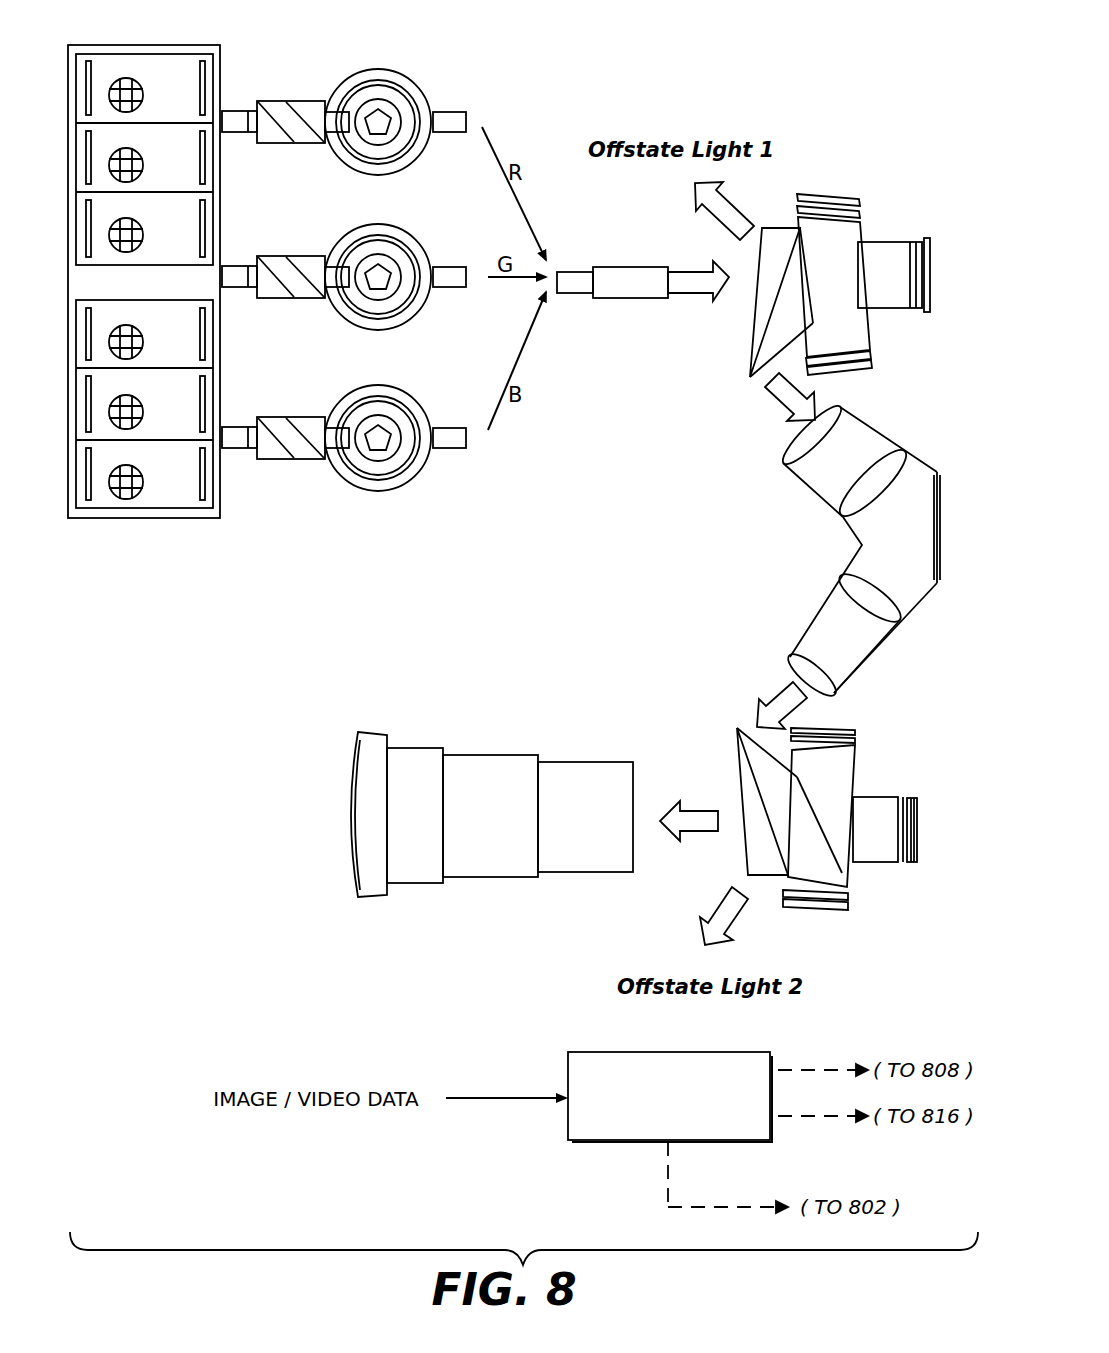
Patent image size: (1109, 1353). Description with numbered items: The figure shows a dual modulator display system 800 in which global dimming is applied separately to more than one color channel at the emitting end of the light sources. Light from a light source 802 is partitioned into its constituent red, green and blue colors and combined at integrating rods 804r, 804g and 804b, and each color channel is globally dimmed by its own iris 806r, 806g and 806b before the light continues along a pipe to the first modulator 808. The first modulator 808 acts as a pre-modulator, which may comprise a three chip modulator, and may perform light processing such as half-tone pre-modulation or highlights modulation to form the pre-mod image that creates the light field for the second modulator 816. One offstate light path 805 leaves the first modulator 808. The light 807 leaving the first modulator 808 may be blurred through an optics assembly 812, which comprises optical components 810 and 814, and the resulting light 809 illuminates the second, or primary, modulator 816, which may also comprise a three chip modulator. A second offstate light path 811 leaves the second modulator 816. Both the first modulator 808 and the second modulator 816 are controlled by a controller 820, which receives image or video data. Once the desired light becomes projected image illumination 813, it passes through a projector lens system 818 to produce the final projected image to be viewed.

The dual modulator display system 800 is at (613, 56).
The light source 802 is at (220, 36).
The red integrating rod 804r is at (267, 100).
The green integrating rod 804g is at (264, 255).
The blue integrating rod 804b is at (267, 416).
The red iris 806r is at (410, 78).
The green iris 806g is at (410, 233).
The blue iris 806b is at (410, 394).
The offstate light path 805 is at (742, 190).
The light 807 is at (772, 415).
The first modulator 808 is at (632, 267).
The light 809 is at (755, 720).
The optical component 810 is at (776, 466).
The offstate light path 811 is at (705, 925).
The optics assembly 812 is at (940, 428).
The projected image illumination 813 is at (706, 805).
The optical component 814 is at (905, 627).
The second modulator 816 is at (920, 910).
The projector lens system 818 is at (428, 748).
The controller 820 is at (718, 1052).